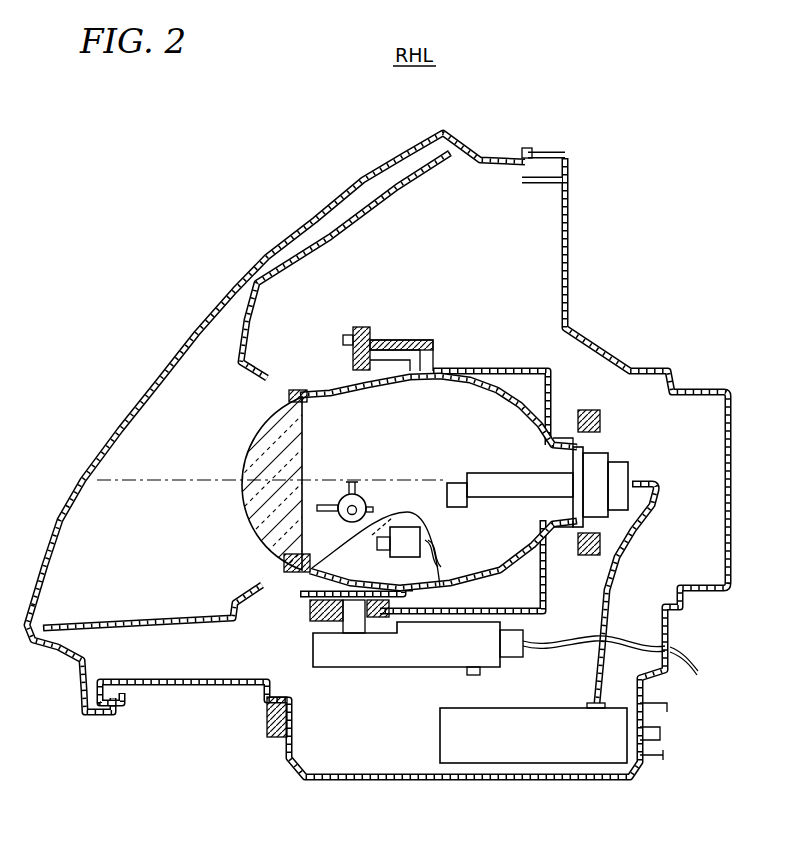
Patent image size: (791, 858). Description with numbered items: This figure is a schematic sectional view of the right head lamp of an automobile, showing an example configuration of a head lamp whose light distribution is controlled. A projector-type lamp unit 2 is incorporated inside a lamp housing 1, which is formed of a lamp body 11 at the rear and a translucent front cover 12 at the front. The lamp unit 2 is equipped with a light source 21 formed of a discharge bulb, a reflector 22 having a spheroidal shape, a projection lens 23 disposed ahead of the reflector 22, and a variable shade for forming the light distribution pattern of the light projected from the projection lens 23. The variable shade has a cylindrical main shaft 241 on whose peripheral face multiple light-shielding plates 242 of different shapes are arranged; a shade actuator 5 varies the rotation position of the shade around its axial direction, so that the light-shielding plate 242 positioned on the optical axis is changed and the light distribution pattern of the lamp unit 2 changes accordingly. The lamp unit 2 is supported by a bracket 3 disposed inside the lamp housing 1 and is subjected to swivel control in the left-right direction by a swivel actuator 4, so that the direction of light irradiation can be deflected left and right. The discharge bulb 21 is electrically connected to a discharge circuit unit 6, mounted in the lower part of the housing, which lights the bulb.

The lamp housing 1 is at (572, 186).
The lamp body 11 is at (570, 247).
The translucent front cover 12 is at (365, 180).
The lamp unit 2 is at (297, 382).
The light source 21 is at (491, 487).
The reflector 22 is at (598, 446).
The projection lens 23 is at (260, 436).
The main shaft 241 is at (343, 518).
The light-shielding plate 242 is at (358, 487).
The bracket 3 is at (467, 368).
The swivel actuator 4 is at (487, 660).
The shade actuator 5 is at (402, 545).
The discharge circuit unit 6 is at (526, 753).